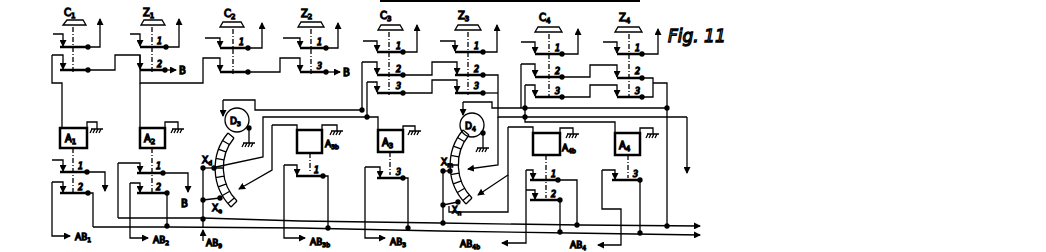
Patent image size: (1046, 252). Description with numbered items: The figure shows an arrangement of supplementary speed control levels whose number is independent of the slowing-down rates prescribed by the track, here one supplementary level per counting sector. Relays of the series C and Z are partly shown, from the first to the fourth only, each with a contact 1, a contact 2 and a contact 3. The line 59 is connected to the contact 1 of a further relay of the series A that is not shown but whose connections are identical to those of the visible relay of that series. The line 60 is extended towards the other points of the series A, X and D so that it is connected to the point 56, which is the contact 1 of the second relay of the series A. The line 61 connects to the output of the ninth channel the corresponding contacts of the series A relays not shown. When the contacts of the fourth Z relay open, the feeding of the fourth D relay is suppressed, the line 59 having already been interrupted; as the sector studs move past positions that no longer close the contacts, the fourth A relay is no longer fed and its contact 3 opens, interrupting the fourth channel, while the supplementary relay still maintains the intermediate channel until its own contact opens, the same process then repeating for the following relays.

The contact 1 is at (76, 34).
The contact 2 is at (71, 63).
The contact 3 is at (235, 68).
The point 56 is at (141, 164).
The line 59 is at (684, 152).
The line 60 is at (417, 224).
The line 61 is at (404, 234).